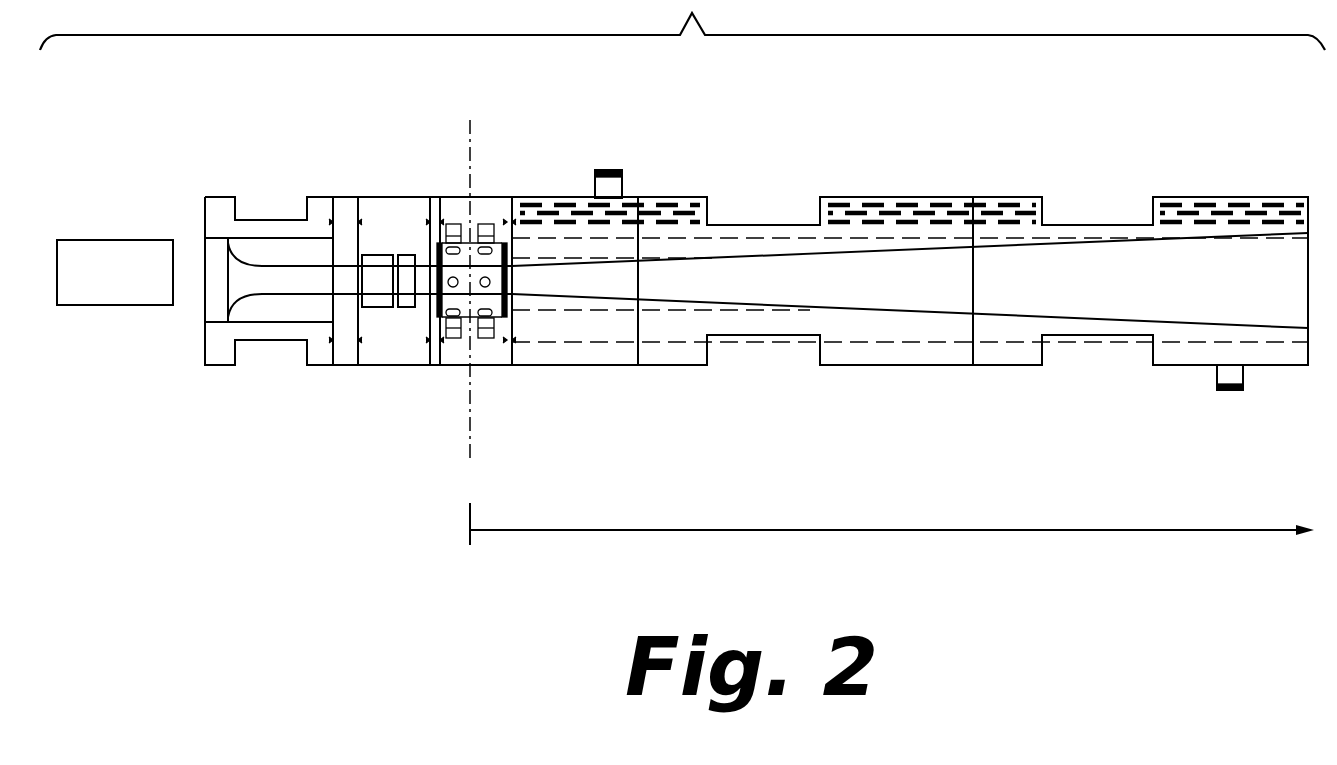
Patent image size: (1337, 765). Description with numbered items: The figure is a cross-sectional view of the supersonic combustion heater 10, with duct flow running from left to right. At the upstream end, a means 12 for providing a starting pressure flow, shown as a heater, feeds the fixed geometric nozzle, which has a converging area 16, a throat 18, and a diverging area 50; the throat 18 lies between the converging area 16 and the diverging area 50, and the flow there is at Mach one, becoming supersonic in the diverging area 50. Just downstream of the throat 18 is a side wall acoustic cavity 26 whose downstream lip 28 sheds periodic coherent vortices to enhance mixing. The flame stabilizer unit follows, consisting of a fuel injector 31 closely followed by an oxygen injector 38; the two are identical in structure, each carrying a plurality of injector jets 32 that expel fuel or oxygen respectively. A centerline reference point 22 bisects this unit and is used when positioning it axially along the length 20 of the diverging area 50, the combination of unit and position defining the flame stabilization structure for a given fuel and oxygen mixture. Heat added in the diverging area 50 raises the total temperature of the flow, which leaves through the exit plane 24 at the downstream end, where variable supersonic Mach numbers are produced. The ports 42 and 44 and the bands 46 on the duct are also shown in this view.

The supersonic combustion heater 10 is at (333, 116).
The means for providing a starting pressure flow 12 is at (125, 240).
The converging area 16 is at (240, 281).
The throat 18 is at (257, 264).
The length 20 is at (707, 527).
The centerline reference point 22 is at (472, 310).
The exit plane 24 is at (1308, 300).
The acoustic cavity 26 is at (375, 284).
The downstream lip 28 is at (423, 270).
The fuel injector 31 is at (438, 243).
The injector jets 32 is at (484, 287).
The oxygen injector 38 is at (496, 246).
The upper port 42 is at (608, 170).
The lower port 44 is at (1228, 392).
The heater bands 46 is at (995, 205).
The diverging area 50 is at (600, 283).